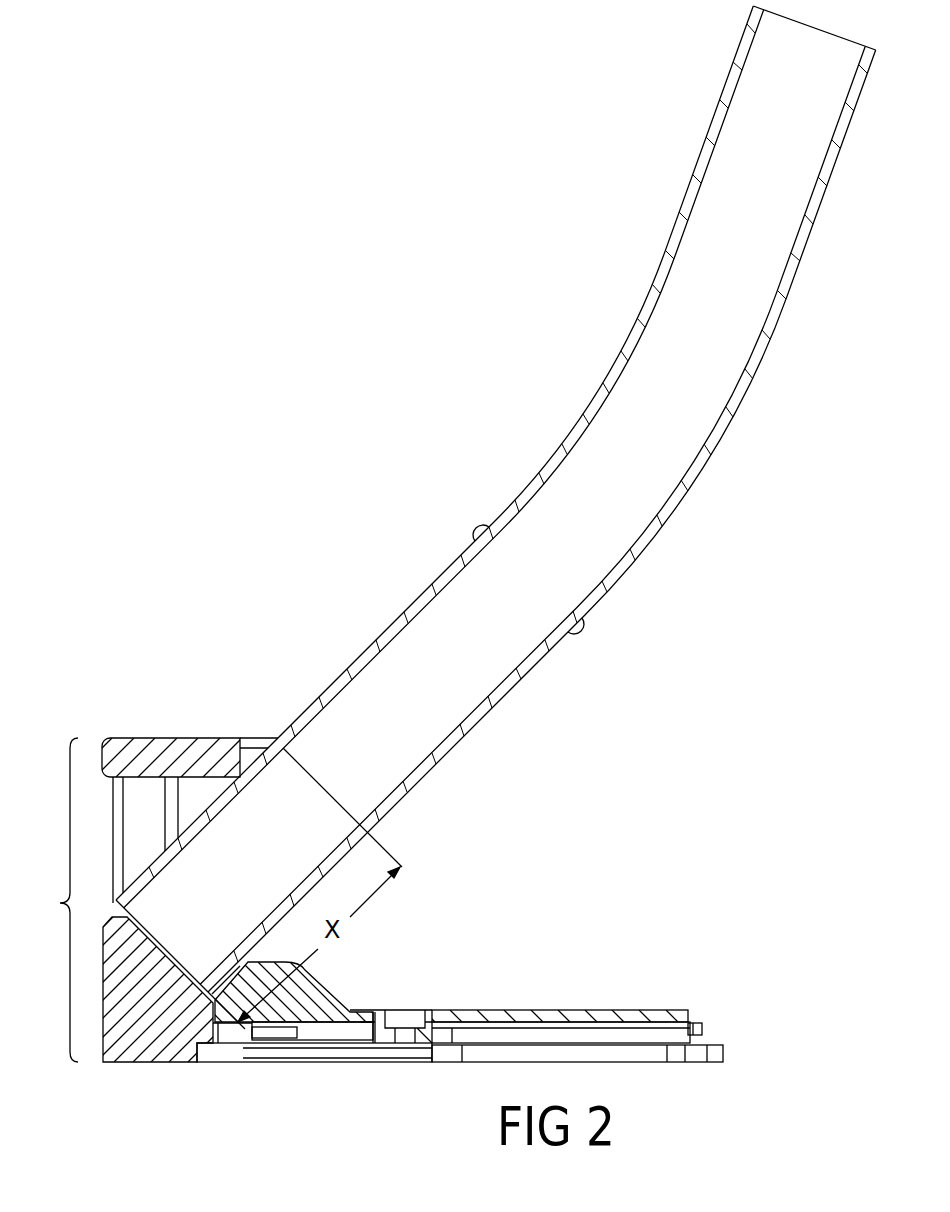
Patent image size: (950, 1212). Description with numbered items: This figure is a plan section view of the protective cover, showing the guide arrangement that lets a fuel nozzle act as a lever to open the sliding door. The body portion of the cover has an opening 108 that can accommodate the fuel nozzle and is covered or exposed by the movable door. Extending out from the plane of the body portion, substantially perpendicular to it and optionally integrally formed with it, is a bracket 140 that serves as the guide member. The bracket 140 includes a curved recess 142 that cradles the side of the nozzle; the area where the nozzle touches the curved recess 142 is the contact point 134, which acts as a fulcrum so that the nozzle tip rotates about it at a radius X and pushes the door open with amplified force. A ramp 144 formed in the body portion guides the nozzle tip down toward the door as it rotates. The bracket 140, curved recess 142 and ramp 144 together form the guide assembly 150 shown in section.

The opening 108 is at (303, 1063).
The contact point 134 is at (266, 742).
The bracket 140 is at (120, 790).
The curved recess 142 is at (240, 739).
The ramp 144 is at (172, 983).
The mounting assembly 150 is at (48, 900).